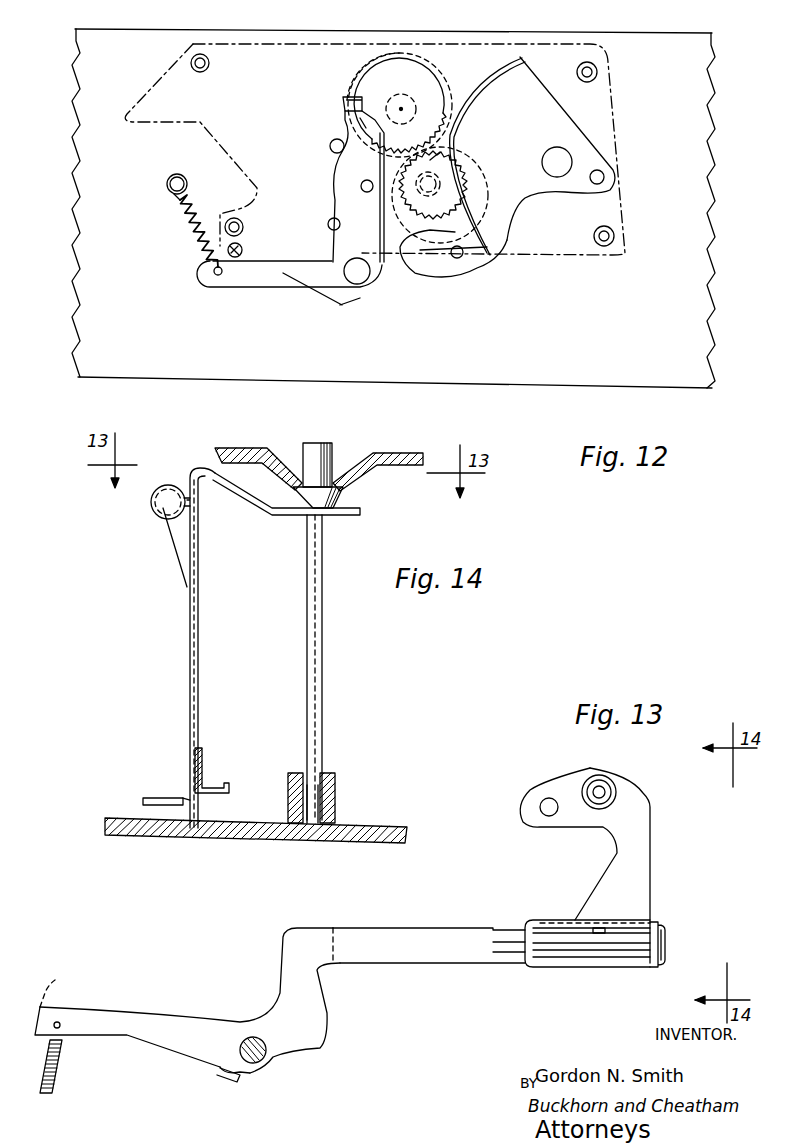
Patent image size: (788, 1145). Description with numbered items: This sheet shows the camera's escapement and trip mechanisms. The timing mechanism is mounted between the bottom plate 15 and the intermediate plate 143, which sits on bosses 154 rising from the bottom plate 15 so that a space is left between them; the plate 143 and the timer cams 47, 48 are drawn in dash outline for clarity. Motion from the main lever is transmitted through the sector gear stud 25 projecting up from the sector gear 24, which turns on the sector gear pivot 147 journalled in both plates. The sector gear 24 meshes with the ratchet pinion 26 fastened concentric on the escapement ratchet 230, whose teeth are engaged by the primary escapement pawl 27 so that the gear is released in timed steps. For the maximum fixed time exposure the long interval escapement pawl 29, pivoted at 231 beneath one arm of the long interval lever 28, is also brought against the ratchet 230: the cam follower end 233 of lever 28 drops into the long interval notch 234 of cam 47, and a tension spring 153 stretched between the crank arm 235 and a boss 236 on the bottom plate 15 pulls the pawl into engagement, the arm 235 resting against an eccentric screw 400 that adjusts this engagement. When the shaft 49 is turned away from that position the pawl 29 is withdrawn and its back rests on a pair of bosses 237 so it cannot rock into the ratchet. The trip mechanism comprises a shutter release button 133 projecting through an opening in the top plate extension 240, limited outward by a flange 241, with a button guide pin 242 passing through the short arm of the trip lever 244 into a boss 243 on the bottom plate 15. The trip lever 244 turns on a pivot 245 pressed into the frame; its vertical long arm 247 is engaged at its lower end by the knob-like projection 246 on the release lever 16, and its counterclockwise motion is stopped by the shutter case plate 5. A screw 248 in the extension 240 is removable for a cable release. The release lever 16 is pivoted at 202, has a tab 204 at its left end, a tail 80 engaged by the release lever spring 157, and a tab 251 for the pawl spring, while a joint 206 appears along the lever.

In FIG. 12, the bottom plate 15 is at (106, 47).
In FIG. 14, the bottom plate 15 is at (262, 838).
In FIG. 12, the intermediate plate 143 is at (283, 62).
In FIG. 12, the bosses 154 is at (204, 70).
In FIG. 12, the cam 48 is at (347, 88).
In FIG. 12, the long interval notch 234 is at (400, 105).
In FIG. 12, the shaft 49 is at (411, 97).
In FIG. 12, the cam follower end 233 is at (343, 100).
In FIG. 12, the long interval escapement pawl 29 is at (340, 186).
In FIG. 12, the bosses 237 is at (330, 147).
In FIG. 12, the pivot 231 is at (366, 193).
In FIG. 12, the boss 236 is at (168, 182).
In FIG. 12, the tension spring 153 is at (195, 246).
In FIG. 12, the crank arm 235 is at (242, 283).
In FIG. 12, the eccentric screw 400 is at (240, 257).
In FIG. 12, the cam 47 is at (454, 107).
In FIG. 12, the escapement ratchet 230 is at (440, 152).
In FIG. 12, the sector gear 24 is at (567, 131).
In FIG. 12, the sector gear stud 25 is at (609, 174).
In FIG. 12, the sector gear pivot 147 is at (549, 156).
In FIG. 12, the primary escapement pawl 27 is at (483, 273).
In FIG. 12, the ratchet pinion 26 is at (440, 195).
In FIG. 12, the long interval lever 28 is at (378, 282).
In FIG. 14, the top plate extension 240 is at (415, 452).
In FIG. 14, the shutter release button 133 is at (328, 460).
In FIG. 13, the shutter release button 133 is at (612, 778).
In FIG. 14, the flange 241 is at (352, 492).
In FIG. 14, the trip lever 244 is at (280, 516).
In FIG. 13, the trip lever 244 is at (650, 890).
In FIG. 14, the pivot 245 is at (160, 513).
In FIG. 13, the pivot 245 is at (640, 966).
In FIG. 14, the vertical long arm 247 is at (216, 648).
In FIG. 13, the vertical long arm 247 is at (550, 920).
In FIG. 14, the button guide pin 242 is at (323, 660).
In FIG. 14, the boss 243 is at (336, 786).
In FIG. 14, the shutter case plate 5 is at (205, 748).
In FIG. 14, the knob-like projection 246 is at (185, 798).
In FIG. 13, the knob-like projection 246 is at (598, 927).
In FIG. 14, the release lever 16 is at (145, 799).
In FIG. 13, the release lever 16 is at (425, 965).
In FIG. 13, the screw 248 is at (568, 839).
In FIG. 13, the joint 206 is at (340, 927).
In FIG. 13, the tail 80 is at (135, 1012).
In FIG. 13, the tab 204 is at (65, 987).
In FIG. 13, the release lever spring 157 is at (63, 1088).
In FIG. 13, the release lever pivot 202 is at (265, 1061).
In FIG. 13, the tab 251 is at (230, 1084).